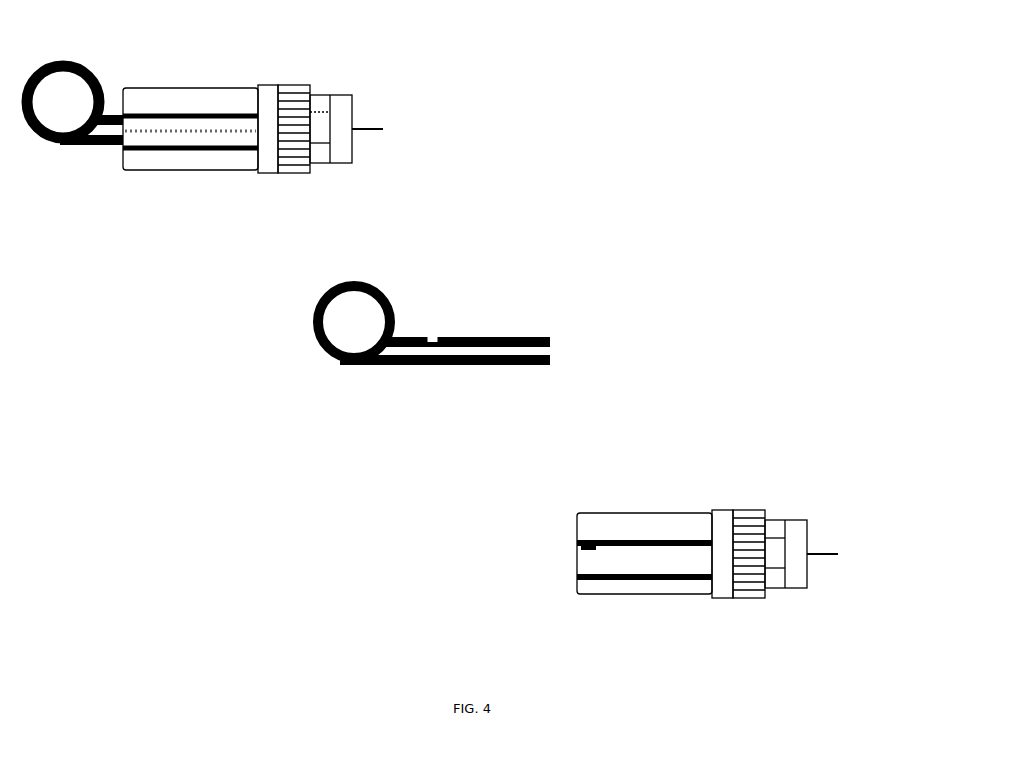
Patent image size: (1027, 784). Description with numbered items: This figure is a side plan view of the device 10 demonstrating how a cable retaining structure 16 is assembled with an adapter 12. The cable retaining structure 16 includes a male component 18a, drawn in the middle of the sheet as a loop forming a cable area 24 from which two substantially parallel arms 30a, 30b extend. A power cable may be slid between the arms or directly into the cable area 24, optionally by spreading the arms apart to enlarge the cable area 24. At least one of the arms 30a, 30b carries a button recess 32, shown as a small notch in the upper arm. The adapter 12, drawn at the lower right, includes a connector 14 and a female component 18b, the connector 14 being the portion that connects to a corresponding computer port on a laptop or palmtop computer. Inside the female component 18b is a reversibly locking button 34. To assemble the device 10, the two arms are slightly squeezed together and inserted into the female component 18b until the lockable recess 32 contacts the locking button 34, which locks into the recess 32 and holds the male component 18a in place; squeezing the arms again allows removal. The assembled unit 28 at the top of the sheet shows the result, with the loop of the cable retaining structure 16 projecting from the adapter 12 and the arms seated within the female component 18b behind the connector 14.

The device 10 is at (722, 141).
The adapter 12 is at (670, 565).
The connector 14 is at (749, 515).
The cable retaining structure 16 is at (452, 307).
The male component 18a is at (517, 300).
The female component 18b is at (607, 550).
The cable area 24 is at (367, 306).
The assembled unit 28 is at (208, 60).
The first arm 30a is at (554, 338).
The second arm 30b is at (554, 360).
The button recess 32 is at (437, 332).
The locking button 34 is at (583, 554).